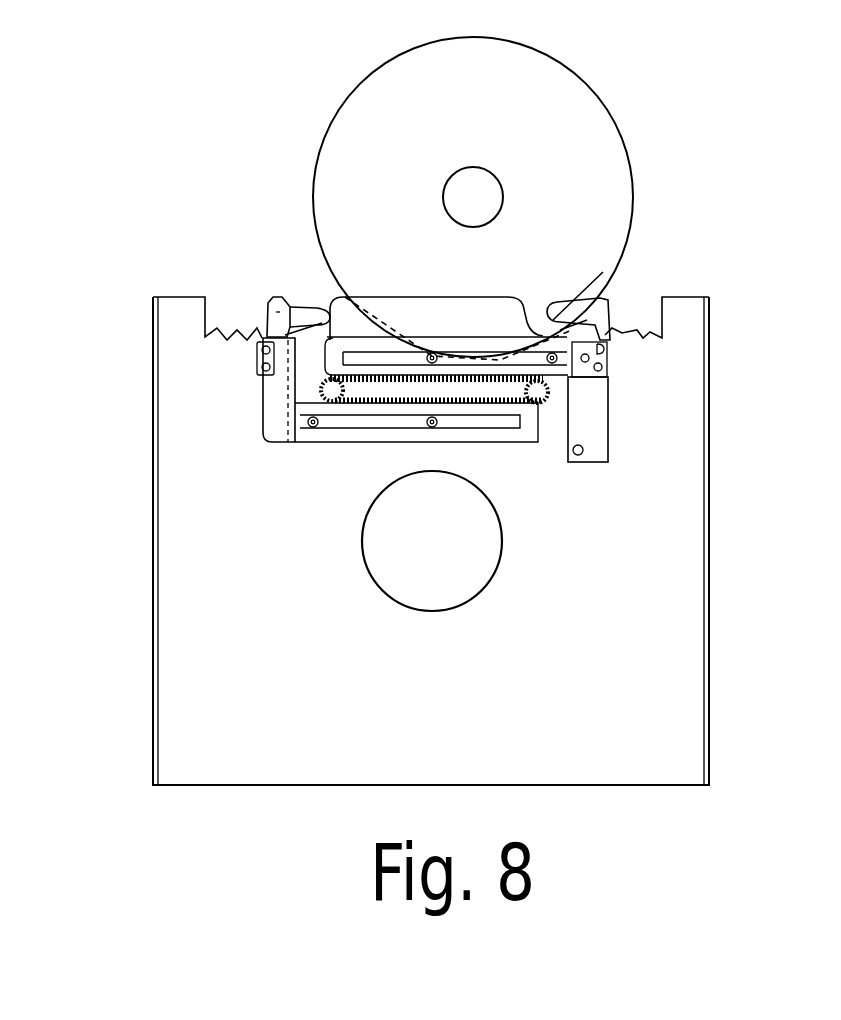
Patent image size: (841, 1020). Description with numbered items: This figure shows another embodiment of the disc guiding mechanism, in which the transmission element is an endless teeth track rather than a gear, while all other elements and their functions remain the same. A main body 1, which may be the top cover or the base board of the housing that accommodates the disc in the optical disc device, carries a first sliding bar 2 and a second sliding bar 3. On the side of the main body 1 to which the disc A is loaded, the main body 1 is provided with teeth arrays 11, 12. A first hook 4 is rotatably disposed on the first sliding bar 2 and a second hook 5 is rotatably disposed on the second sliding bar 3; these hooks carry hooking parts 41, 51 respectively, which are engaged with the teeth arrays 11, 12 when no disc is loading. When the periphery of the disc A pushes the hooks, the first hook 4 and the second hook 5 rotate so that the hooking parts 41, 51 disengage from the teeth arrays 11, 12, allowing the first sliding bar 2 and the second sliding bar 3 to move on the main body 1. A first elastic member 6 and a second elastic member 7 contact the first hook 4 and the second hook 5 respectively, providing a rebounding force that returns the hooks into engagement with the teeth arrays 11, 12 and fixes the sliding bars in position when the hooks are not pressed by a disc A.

The main body 1 is at (685, 602).
The teeth array 11 is at (205, 337).
The teeth array 12 is at (650, 338).
The first sliding bar 2 is at (273, 403).
The second sliding bar 3 is at (592, 412).
The first hook 4 is at (293, 307).
The hooking part 41 is at (320, 303).
The second hook 5 is at (598, 300).
The hooking part 51 is at (590, 300).
The first elastic member 6 is at (260, 322).
The second elastic member 7 is at (615, 318).
The disc A is at (538, 133).